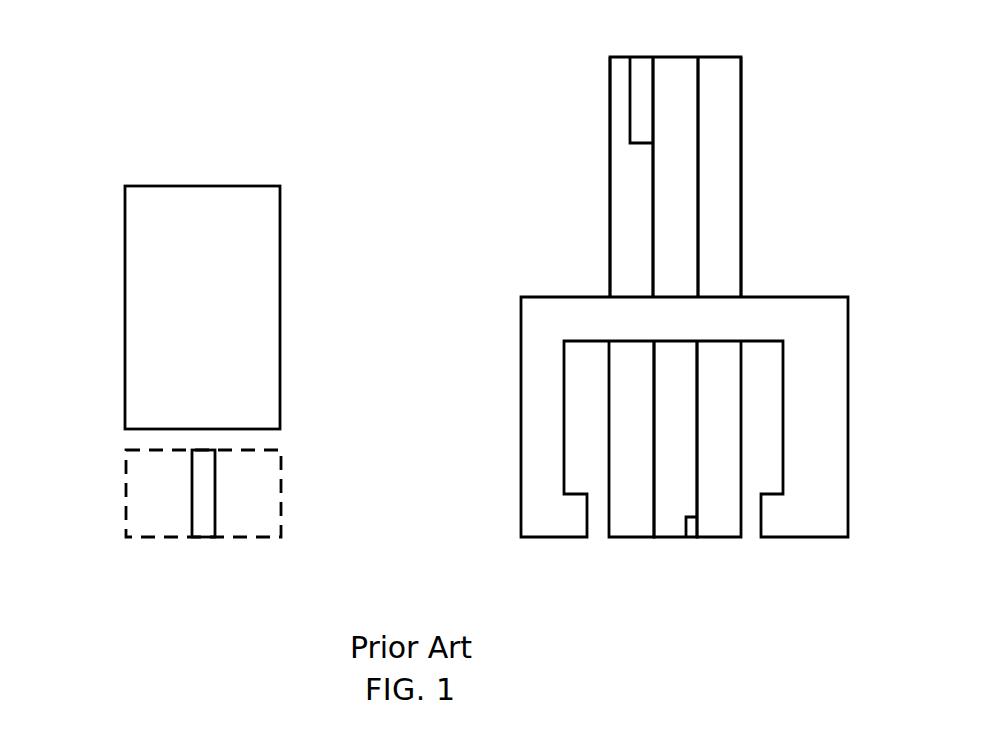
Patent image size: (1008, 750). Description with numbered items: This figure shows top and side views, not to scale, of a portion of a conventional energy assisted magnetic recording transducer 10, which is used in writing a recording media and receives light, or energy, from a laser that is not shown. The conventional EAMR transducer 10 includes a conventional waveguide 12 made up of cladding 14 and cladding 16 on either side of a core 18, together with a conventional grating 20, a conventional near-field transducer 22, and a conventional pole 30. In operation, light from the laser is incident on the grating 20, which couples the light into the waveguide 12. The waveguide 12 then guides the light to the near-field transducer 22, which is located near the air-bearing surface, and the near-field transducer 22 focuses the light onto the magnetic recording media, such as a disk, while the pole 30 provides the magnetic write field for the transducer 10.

The conventional energy assisted magnetic recording (EAMR) transducer 10 is at (392, 48).
The conventional waveguide 12 is at (707, 297).
The cladding 14 is at (741, 277).
The cladding 16 is at (610, 287).
The core 18 is at (698, 223).
The conventional grating 20 is at (630, 107).
The conventional near-field transducer (NFT) 22 is at (80, 512).
The conventional pole 30 is at (280, 268).